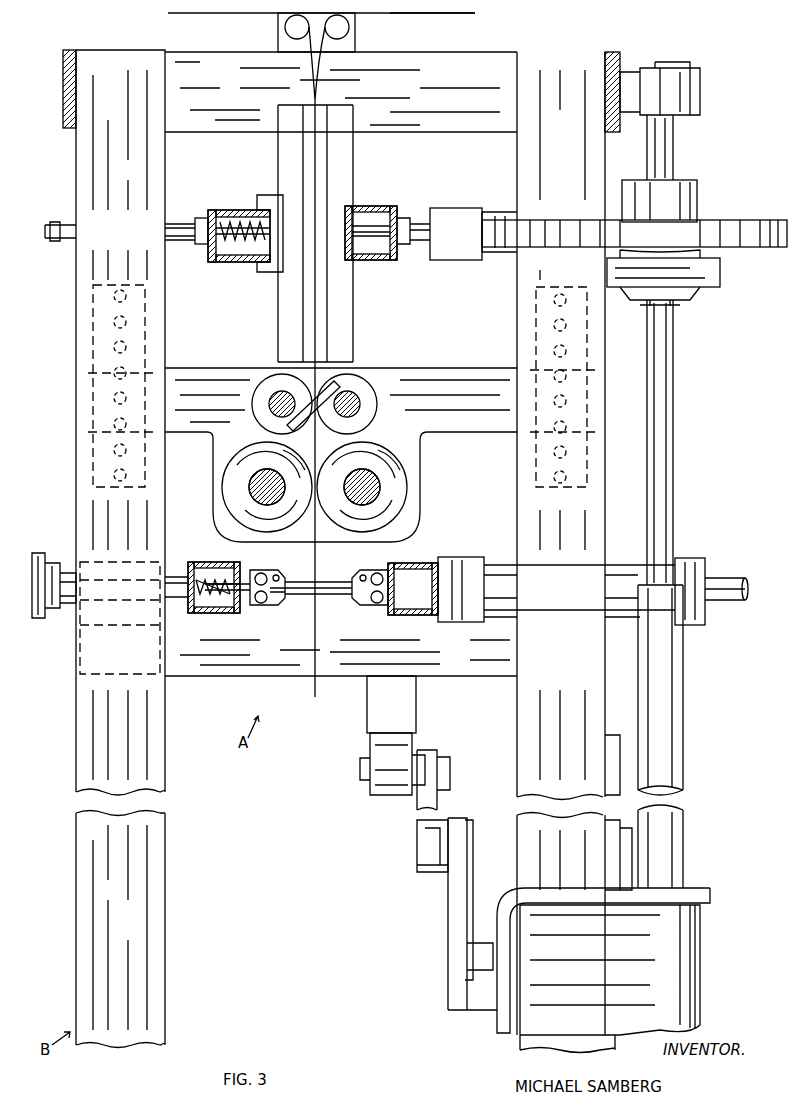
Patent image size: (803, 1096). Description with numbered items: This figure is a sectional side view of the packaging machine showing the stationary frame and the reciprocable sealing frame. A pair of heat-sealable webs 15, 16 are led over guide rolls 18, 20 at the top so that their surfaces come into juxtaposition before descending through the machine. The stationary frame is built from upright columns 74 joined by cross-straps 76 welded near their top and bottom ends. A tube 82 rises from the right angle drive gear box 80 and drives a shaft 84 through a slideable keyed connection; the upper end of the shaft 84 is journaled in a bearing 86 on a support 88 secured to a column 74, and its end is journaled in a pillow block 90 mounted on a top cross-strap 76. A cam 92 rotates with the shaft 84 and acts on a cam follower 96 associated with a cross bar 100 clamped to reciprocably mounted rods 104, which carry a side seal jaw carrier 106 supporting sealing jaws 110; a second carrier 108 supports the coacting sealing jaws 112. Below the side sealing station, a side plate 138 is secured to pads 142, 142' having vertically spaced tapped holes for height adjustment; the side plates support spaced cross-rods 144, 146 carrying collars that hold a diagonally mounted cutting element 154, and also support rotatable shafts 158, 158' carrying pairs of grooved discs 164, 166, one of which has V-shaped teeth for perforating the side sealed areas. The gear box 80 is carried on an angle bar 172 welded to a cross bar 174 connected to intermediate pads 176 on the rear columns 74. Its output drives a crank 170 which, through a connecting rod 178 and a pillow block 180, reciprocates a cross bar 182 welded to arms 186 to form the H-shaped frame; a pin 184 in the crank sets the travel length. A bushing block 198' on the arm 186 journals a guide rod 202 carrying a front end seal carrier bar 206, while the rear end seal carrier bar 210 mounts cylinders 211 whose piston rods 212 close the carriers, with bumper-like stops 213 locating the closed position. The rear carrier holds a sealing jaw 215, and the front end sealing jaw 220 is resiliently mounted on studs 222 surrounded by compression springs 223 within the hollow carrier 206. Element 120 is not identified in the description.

The heat-sealable web 15 is at (398, 13).
The heat-sealable web 16 is at (222, 13).
The guide roll 18 is at (350, 33).
The guide roll 20 is at (282, 32).
The upright column 74 is at (76, 152).
The cross-strap 76 is at (63, 88).
The right angle drive gear box 80 is at (700, 966).
The tube 82 is at (683, 748).
The shaft 84 is at (673, 395).
The bearing 86 is at (720, 283).
The support 88 is at (700, 252).
The pillow block 90 is at (700, 92).
The cam 92 is at (710, 224).
The cam follower 96 is at (528, 222).
The cross bar 100 is at (436, 208).
The reciprocably mounted rod 104 is at (48, 224).
The side seal jaw carrier 106 is at (370, 210).
The side seal jaw carrier 108 is at (237, 210).
The sealing jaw 110 is at (353, 152).
The sealing jaw 112 is at (278, 152).
The bracket 120 is at (268, 278).
The side plate 138 is at (478, 368).
The pad 142 is at (95, 385).
The pad 142' is at (586, 387).
The cross-rod 144 is at (360, 404).
The cross-rod 146 is at (270, 404).
The cutting element 154 is at (337, 383).
The rotatable shaft 158 is at (232, 495).
The rotatable shaft 158' is at (404, 495).
The circumferentially grooved disc 164 is at (405, 466).
The circumferentially grooved disc 166 is at (232, 466).
The crank 170 is at (467, 953).
The angle bar 172 is at (696, 888).
The cross bar 174 is at (632, 840).
The intermediate pad 176 is at (620, 765).
The connecting rod 178 is at (417, 846).
The pillow block 180 is at (380, 748).
The cross bar 182 is at (367, 714).
The pin 184 is at (470, 845).
The arm 186 is at (268, 676).
The bushing block 198' is at (97, 594).
The guide rod 202 is at (66, 605).
The front end seal carrier bar 206 is at (217, 553).
The rear end seal carrier bar 210 is at (396, 563).
The air or hydraulic cylinder 211 is at (522, 565).
The piston rod 212 is at (745, 580).
The bumper-like stop 213 is at (42, 620).
The sealing jaw 215 is at (366, 608).
The front end sealing jaw 220 is at (268, 608).
The stud 222 is at (228, 600).
The compression spring 223 is at (213, 608).